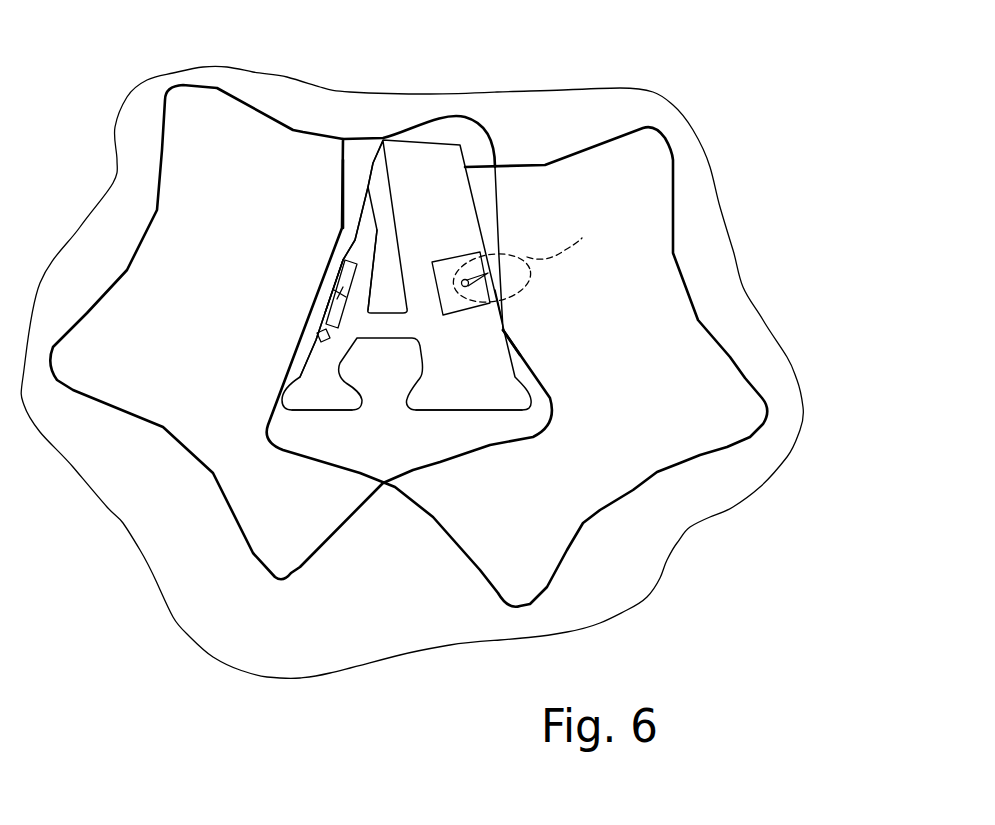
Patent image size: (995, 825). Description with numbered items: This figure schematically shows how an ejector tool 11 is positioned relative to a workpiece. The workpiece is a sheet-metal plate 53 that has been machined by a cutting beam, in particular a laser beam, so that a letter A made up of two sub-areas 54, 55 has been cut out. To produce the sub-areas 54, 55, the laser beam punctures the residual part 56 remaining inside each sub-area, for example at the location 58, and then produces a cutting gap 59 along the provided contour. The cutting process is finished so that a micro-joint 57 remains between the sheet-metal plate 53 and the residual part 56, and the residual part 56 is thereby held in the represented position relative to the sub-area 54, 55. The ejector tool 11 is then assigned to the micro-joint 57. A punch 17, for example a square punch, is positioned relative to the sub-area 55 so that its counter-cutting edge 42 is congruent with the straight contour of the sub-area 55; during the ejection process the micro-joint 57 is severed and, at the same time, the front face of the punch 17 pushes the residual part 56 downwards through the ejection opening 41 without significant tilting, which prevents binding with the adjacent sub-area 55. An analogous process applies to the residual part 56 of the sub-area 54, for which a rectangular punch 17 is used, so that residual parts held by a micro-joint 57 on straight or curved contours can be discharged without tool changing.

The ejector tool 11 is at (568, 140).
The punch 17 is at (318, 339).
The ejection opening 41 is at (347, 545).
The counter-cutting edge 42 is at (329, 315).
The sheet-metal plate 53 is at (201, 575).
The sub-area 54 is at (320, 416).
The sub-area 55 is at (458, 415).
The residual part 56 is at (337, 399).
The micro-joint 57 is at (500, 283).
The puncture location 58 is at (340, 292).
The cutting gap 59 is at (343, 226).